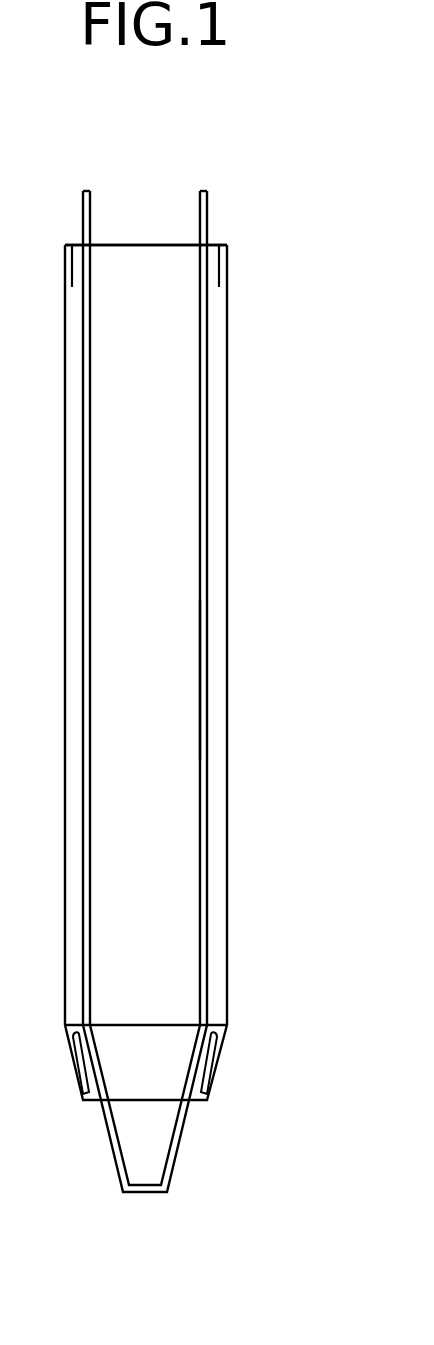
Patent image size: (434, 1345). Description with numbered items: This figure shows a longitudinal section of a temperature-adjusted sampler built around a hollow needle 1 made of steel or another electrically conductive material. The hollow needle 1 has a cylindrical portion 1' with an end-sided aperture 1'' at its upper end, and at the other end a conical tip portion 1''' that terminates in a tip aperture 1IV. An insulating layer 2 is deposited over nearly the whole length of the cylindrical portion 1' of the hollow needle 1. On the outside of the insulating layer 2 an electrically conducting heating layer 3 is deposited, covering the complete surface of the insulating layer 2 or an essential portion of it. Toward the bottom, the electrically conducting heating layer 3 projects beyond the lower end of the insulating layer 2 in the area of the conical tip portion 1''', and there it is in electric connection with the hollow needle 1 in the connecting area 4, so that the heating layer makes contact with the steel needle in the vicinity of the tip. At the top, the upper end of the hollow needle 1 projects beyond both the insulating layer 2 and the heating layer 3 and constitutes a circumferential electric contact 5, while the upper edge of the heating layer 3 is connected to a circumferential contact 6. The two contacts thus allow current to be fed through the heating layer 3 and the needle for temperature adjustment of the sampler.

The hollow needle 1 is at (181, 635).
The cylindrical portion 1' is at (171, 680).
The end-sided aperture 1'' is at (146, 189).
The conical tip portion 1''' is at (146, 1062).
The tip aperture 1IV is at (150, 1195).
The insulating layer 2 is at (220, 584).
The electrically conducting heating layer 3 is at (227, 834).
The connecting area 4 is at (217, 1070).
The circumferential electric contact 5 is at (201, 191).
The circumferential contact 6 is at (219, 263).